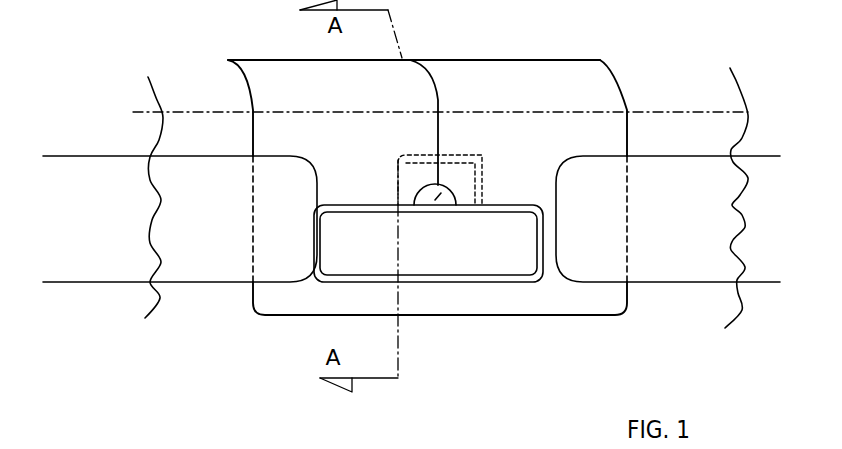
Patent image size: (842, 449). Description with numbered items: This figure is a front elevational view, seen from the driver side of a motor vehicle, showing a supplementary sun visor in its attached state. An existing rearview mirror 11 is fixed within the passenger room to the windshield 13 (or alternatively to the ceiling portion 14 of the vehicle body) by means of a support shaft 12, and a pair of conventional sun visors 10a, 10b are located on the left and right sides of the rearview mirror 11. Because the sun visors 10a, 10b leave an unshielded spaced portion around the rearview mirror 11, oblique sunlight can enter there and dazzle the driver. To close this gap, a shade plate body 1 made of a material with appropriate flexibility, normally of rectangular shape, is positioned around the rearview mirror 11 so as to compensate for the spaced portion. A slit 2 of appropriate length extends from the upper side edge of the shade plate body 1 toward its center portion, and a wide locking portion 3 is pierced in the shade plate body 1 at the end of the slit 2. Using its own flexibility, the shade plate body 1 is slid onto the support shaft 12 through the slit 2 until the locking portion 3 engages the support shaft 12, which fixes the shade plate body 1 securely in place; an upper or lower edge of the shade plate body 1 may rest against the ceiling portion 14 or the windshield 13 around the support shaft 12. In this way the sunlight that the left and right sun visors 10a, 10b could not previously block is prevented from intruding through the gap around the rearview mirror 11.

The shade plate body 1 is at (560, 295).
The slit 2 is at (440, 100).
The locking portion 3 is at (440, 185).
The sun visor 10a is at (222, 257).
The sun visor 10b is at (682, 225).
The rearview mirror 11 is at (477, 252).
The support shaft 12 is at (428, 165).
The windshield 13 is at (230, 143).
The ceiling portion 14 is at (658, 112).